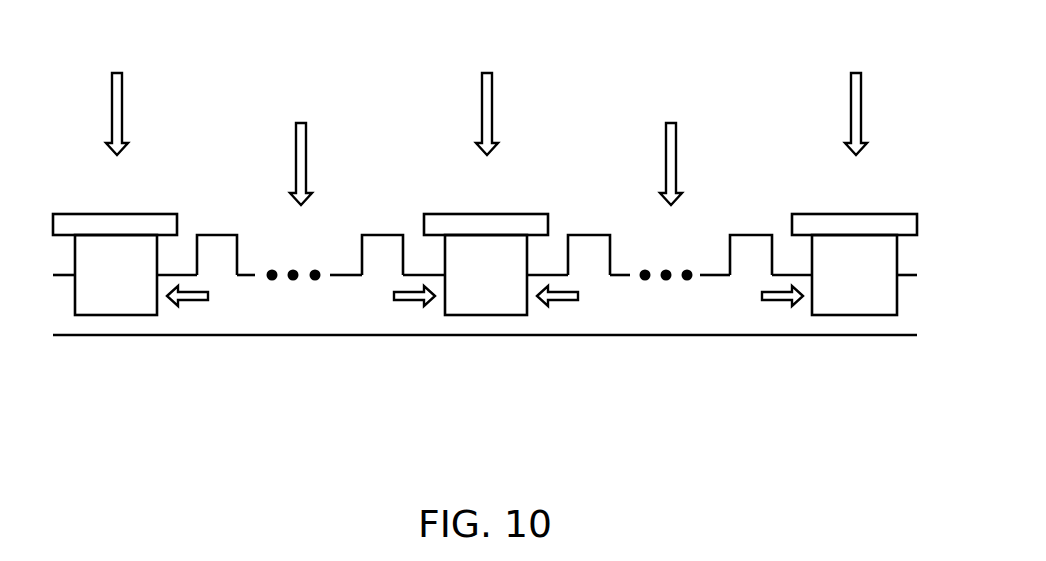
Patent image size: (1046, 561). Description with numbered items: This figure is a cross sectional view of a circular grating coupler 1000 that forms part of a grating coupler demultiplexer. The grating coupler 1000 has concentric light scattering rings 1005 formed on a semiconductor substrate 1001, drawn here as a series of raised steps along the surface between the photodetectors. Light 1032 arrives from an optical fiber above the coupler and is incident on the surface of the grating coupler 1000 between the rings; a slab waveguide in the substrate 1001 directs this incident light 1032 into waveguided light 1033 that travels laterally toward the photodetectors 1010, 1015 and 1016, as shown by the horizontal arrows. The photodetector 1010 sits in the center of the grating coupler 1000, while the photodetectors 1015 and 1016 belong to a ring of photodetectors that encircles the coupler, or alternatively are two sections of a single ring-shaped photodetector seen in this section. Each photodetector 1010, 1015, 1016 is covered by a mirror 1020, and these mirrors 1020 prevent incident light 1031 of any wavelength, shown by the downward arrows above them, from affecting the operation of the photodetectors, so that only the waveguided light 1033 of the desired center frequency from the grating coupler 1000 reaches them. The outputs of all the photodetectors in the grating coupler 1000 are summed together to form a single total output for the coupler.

The circular grating coupler 1000 is at (187, 441).
The semiconductor substrate 1001 is at (383, 336).
The concentric light scattering rings 1005 is at (388, 265).
The photodetector 1010 is at (486, 275).
The photodetector 1015 is at (116, 275).
The photodetector 1016 is at (854, 275).
The mirrors 1020 is at (158, 212).
The incident light 1031 is at (112, 73).
The incident light 1032 is at (297, 123).
The waveguided light 1033 is at (184, 301).